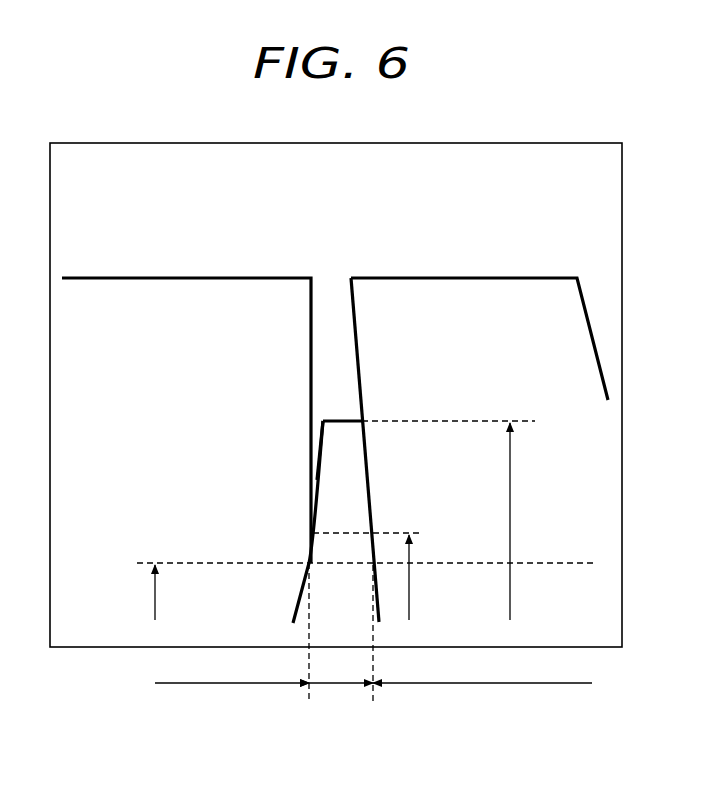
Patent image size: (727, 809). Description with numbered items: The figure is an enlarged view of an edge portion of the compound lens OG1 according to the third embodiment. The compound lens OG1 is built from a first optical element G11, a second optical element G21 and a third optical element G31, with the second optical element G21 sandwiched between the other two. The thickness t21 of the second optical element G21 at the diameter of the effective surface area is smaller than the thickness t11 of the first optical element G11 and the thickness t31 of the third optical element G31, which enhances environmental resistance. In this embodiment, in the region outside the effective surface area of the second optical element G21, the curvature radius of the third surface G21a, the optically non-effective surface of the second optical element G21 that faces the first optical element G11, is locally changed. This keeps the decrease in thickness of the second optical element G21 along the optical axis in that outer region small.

The compound lens OG1 is at (585, 132).
The first optical element G11 is at (192, 297).
The second optical element G21 is at (345, 433).
The third surface G21a is at (310, 479).
The third optical element G31 is at (462, 297).
The thickness of the first optical element t11 is at (232, 700).
The thickness of the second optical element t21 is at (341, 690).
The thickness of the third optical element t31 is at (482, 700).